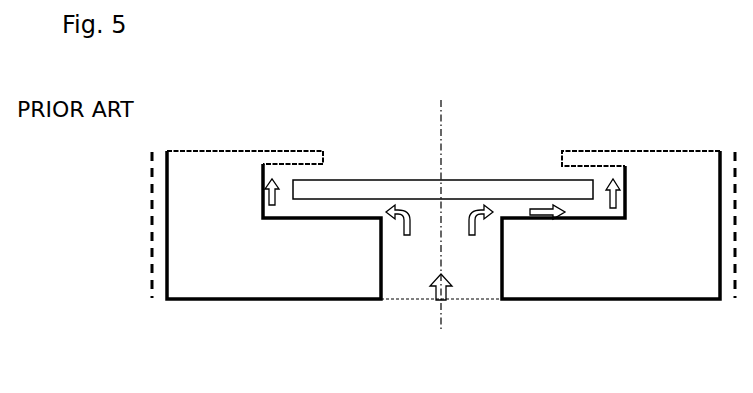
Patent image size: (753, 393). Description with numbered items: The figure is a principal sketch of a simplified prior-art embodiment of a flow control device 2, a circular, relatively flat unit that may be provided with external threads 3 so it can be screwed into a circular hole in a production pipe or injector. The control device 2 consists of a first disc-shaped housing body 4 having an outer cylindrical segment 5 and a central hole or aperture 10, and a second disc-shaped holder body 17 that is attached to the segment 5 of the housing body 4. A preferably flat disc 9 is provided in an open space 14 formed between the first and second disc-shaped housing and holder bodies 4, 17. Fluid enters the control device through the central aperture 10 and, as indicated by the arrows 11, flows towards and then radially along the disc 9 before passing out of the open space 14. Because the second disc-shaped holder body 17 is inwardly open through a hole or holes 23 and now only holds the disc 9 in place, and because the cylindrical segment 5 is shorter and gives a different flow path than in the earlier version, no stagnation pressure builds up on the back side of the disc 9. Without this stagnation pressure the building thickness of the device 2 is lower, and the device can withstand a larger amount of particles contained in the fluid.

The control device 2 is at (243, 312).
The external threads 3 is at (735, 155).
The first disc-shaped housing body 4 is at (566, 255).
The outer cylindrical segment 5 is at (703, 207).
The disc 9 is at (425, 192).
The central hole or aperture 10 is at (412, 245).
The arrows 11 is at (440, 302).
The open space 14 is at (287, 189).
The second disc-shaped holder body 17 is at (293, 152).
The hole 23 is at (497, 158).